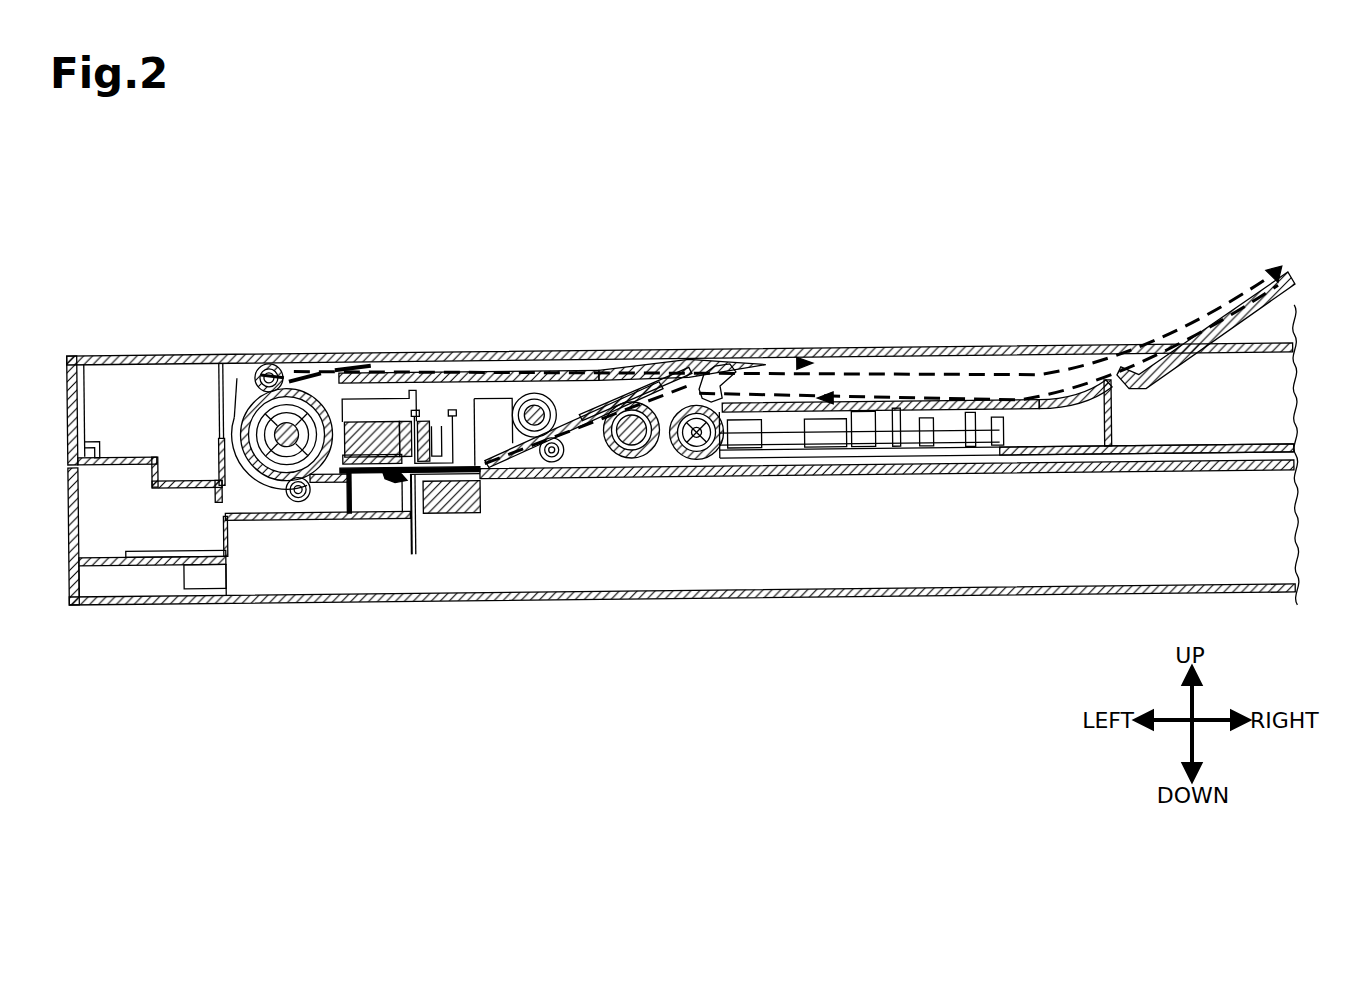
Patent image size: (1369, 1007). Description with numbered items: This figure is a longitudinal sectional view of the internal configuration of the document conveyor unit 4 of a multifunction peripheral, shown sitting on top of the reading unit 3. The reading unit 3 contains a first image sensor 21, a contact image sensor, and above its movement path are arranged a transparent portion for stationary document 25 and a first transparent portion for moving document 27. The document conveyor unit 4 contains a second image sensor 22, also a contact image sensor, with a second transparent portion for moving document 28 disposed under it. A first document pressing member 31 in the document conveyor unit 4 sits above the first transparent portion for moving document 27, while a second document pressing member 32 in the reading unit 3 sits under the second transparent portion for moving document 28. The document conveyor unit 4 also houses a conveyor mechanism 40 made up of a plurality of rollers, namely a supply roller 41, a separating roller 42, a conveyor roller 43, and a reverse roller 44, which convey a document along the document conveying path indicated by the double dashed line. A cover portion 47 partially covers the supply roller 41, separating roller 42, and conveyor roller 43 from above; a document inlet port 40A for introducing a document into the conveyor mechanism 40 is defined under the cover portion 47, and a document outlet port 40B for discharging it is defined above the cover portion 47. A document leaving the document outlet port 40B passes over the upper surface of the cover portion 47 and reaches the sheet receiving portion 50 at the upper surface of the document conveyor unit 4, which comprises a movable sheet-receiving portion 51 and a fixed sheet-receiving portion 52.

The reading unit 3 is at (170, 606).
The document conveyor unit 4 is at (173, 356).
The first image sensor 21 is at (449, 522).
The second image sensor 22 is at (378, 458).
The transparent portion for stationary document 25 is at (600, 484).
The first transparent portion for moving document 27 is at (416, 486).
The second transparent portion for moving document 28 is at (353, 430).
The first document pressing member 31 is at (452, 467).
The second document pressing member 32 is at (390, 482).
The conveyor mechanism 40 is at (708, 492).
The document inlet port 40A is at (742, 400).
The document outlet port 40B is at (596, 373).
The supply roller 41 is at (697, 469).
The separating roller 42 is at (636, 468).
The conveyor roller 43 is at (552, 467).
The reverse roller 44 is at (292, 390).
The cover portion 47 is at (725, 370).
The sheet receiving portion 50 is at (1093, 340).
The movable sheet-receiving portion 51 is at (1182, 387).
The fixed sheet-receiving portion 52 is at (1076, 409).